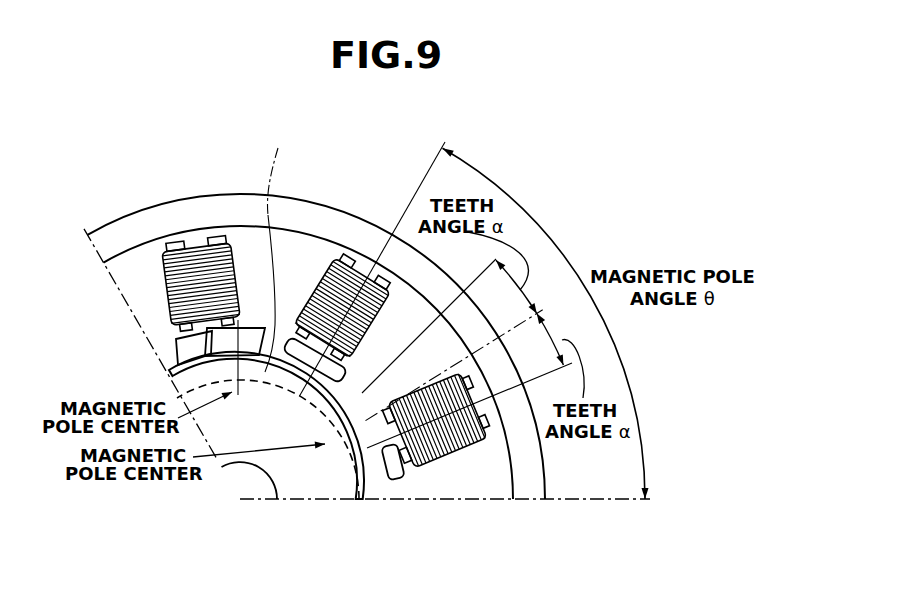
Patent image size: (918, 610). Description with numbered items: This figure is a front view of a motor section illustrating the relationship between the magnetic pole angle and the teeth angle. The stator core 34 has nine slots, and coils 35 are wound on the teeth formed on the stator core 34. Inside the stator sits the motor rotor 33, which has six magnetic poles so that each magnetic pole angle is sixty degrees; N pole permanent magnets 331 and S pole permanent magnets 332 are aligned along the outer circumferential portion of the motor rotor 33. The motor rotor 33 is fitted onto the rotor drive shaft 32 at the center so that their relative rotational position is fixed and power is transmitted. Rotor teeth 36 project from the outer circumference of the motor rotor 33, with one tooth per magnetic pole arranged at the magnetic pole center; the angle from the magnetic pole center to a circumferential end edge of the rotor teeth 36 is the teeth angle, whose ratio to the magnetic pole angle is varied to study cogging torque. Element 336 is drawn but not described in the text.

The rotor drive shaft 32 is at (235, 490).
The motor rotor 33 is at (172, 365).
The stator core 34 is at (320, 217).
The coil 35 is at (198, 260).
The rotor teeth 36 is at (250, 325).
The N pole permanent magnet 331 is at (278, 245).
The S pole permanent magnet 332 is at (367, 480).
The rotor 336 is at (303, 482).